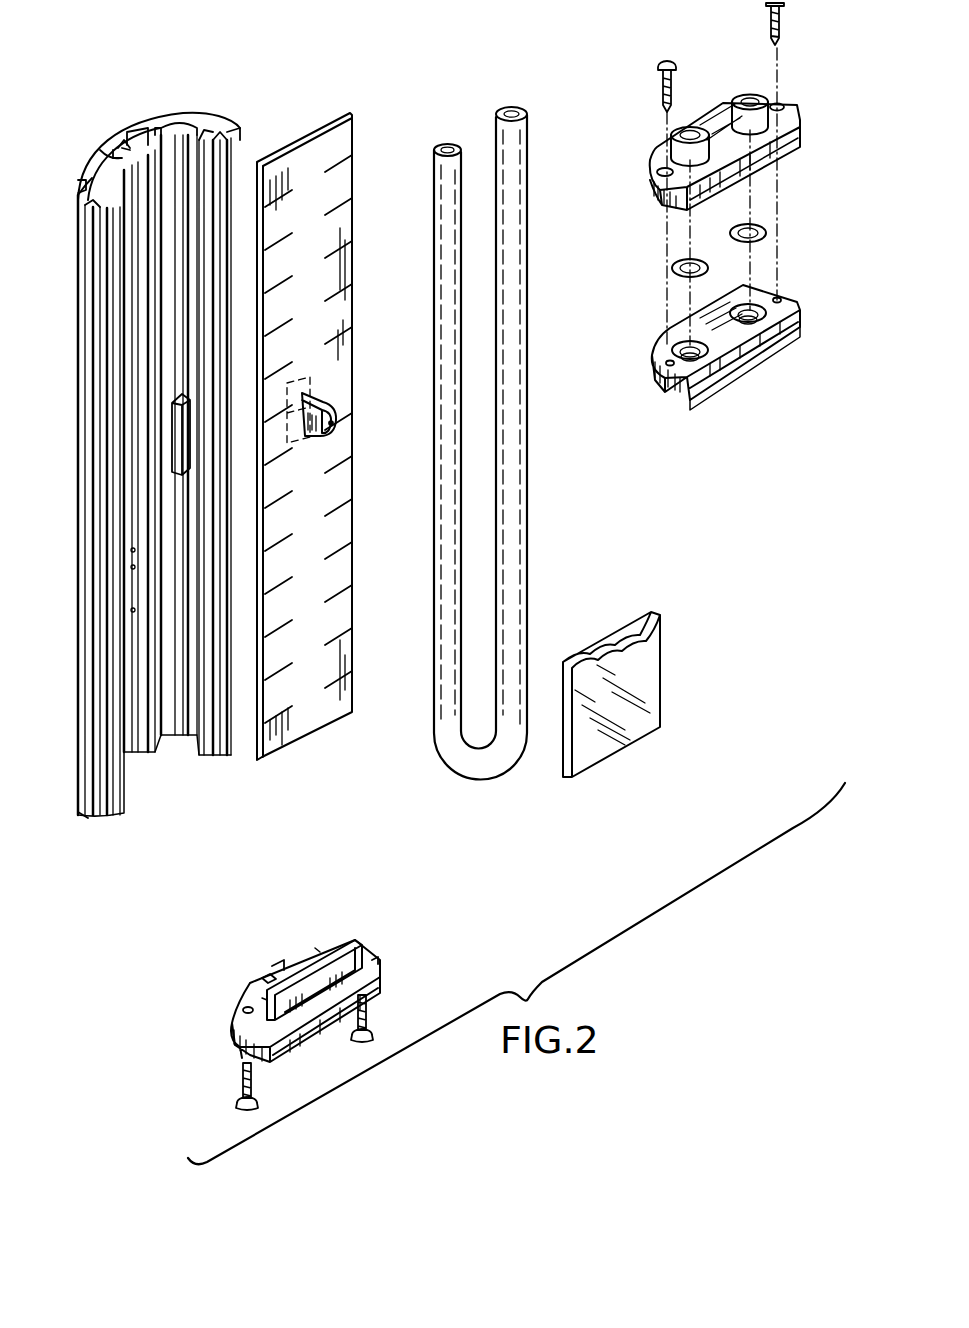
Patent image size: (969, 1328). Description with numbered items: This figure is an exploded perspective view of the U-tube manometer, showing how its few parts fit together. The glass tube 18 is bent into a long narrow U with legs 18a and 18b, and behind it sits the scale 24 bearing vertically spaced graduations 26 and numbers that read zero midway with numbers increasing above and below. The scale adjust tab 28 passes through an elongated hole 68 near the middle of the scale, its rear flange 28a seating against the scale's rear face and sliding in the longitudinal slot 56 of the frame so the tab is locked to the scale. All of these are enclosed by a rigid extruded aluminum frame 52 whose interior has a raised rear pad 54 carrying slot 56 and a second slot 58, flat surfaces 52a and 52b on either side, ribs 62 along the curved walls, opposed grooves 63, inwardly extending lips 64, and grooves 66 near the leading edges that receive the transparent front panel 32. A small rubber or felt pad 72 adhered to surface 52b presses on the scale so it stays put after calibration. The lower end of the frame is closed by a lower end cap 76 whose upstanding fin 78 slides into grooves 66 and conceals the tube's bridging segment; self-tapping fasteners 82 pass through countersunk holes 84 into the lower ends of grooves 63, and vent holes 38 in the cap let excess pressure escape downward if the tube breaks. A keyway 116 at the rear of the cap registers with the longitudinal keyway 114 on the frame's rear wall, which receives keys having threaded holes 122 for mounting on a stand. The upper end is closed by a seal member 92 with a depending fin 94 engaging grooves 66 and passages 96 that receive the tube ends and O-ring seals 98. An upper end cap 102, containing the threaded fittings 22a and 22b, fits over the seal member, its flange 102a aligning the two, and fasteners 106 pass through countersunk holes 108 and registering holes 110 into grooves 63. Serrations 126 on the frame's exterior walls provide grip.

The glass tube 18 is at (460, 775).
The tube leg 18a is at (440, 188).
The tube leg 18b is at (512, 167).
The pipe fitting 22a is at (667, 134).
The pipe fitting 22b is at (747, 97).
The scale 24 is at (340, 148).
The graduations 26 is at (330, 505).
The scale adjust tab 28 is at (328, 398).
The flange 28a is at (310, 378).
The front panel 32 is at (652, 657).
The vent holes 38 is at (317, 947).
The frame 52 is at (190, 110).
The flat surface 52a is at (110, 165).
The flat surface 52b is at (177, 128).
The pad 54 is at (142, 128).
The longitudinal slot 56 is at (115, 140).
The second longitudinal slot 58 is at (157, 133).
The rib 62 is at (92, 178).
The grooves 63 is at (78, 188).
The lips 64 is at (92, 210).
The grooves 66 is at (222, 125).
The elongated hole 68 is at (336, 423).
The pad 72 is at (172, 428).
The lower end cap 76 is at (375, 952).
The fin 78 is at (318, 960).
The threaded fasteners 82 is at (358, 1012).
The countersunk holes 84 is at (363, 950).
The seal member 92 is at (657, 347).
The fin 94 is at (686, 402).
The passages 96 is at (687, 340).
The O-ring seals 98 is at (675, 263).
The upper end cap 102 is at (800, 112).
The flange 102a is at (790, 147).
The threaded fasteners 106 is at (657, 75).
The countersunk holes 108 is at (653, 170).
The holes 110 is at (782, 297).
The keyway 114 is at (122, 147).
The keyway 116 is at (270, 972).
The threaded holes 122 is at (130, 566).
The serrations 126 is at (232, 130).